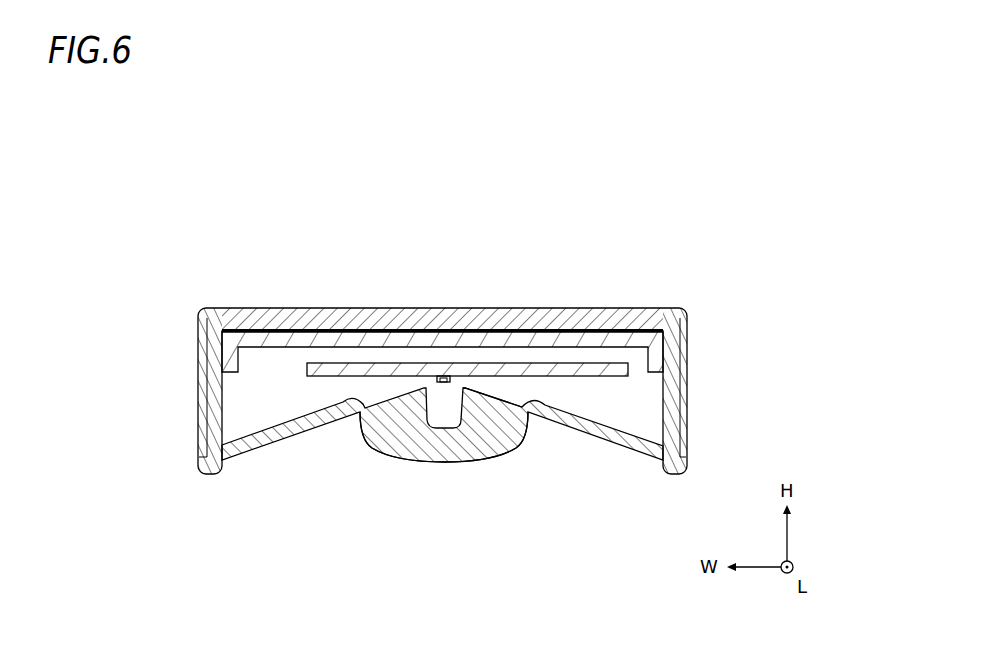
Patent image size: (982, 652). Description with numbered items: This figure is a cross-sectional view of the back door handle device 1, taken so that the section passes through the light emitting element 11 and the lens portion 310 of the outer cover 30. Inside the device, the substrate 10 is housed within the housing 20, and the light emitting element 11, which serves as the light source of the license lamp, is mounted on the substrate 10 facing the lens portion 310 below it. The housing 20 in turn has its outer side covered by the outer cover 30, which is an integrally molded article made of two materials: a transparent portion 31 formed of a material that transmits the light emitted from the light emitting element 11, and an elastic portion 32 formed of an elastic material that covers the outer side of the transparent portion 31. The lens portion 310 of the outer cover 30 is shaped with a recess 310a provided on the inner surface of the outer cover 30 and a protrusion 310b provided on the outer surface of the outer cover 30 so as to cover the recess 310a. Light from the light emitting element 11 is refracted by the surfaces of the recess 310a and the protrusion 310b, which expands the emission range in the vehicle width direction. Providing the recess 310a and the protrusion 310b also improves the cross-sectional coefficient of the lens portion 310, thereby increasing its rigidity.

The back door handle device 1 is at (627, 183).
The substrate 10 is at (628, 372).
The light emitting element 11 is at (443, 376).
The housing 20 is at (630, 337).
The outer cover 30 is at (197, 160).
The transparent portion 31 is at (210, 317).
The elastic portion 32 is at (285, 318).
The lens portion 310 is at (397, 437).
The recess 310a is at (465, 403).
The protrusion 310b is at (440, 462).